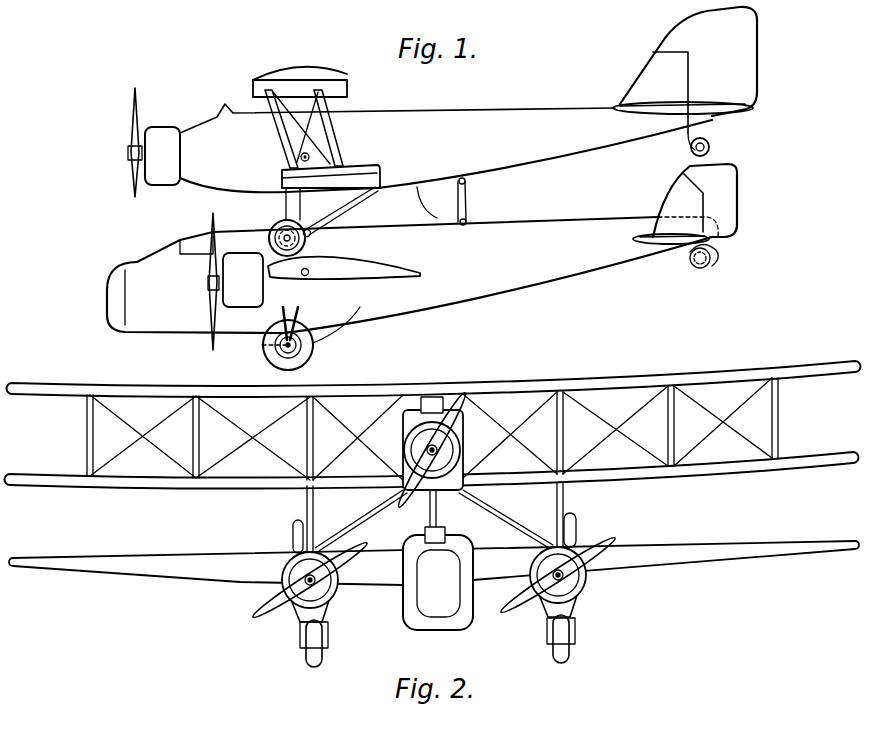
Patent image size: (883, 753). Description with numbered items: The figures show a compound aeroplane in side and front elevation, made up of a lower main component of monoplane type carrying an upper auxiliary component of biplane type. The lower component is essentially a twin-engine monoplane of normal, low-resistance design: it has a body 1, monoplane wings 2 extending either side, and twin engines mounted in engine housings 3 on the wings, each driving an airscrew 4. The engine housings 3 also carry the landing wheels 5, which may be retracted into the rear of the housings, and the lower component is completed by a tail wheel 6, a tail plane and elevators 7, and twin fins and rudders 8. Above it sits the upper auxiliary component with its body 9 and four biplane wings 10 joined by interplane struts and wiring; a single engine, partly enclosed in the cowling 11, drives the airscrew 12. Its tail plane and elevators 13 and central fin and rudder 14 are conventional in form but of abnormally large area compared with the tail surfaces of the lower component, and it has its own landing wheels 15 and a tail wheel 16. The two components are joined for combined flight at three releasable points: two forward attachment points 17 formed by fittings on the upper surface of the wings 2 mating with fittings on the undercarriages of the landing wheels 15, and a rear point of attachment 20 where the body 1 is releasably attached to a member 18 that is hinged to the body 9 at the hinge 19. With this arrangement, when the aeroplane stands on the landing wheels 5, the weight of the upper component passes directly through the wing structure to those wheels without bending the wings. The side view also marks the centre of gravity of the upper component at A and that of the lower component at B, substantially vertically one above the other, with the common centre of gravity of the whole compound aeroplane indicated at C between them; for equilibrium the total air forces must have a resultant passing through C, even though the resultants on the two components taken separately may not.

In FIG. 1, the body 1 is at (509, 296).
In FIG. 2, the body 1 is at (410, 612).
In FIG. 1, the monoplane wings 2 is at (385, 266).
In FIG. 2, the monoplane wings 2 is at (162, 568).
In FIG. 1, the engine housings 3 is at (280, 297).
In FIG. 1, the airscrews 4 is at (210, 318).
In FIG. 2, the airscrews 4 is at (258, 614).
In FIG. 1, the landing wheels 5 is at (315, 346).
In FIG. 2, the landing wheels 5 is at (320, 640).
In FIG. 1, the tail wheel 6 is at (700, 270).
In FIG. 1, the tail plane and elevators 7 is at (660, 244).
In FIG. 1, the twin fins and rudders 8 is at (730, 188).
In FIG. 1, the body 9 is at (482, 113).
In FIG. 2, the body 9 is at (466, 467).
In FIG. 1, the biplane wings 10 is at (296, 75).
In FIG. 2, the biplane wings 10 is at (530, 385).
In FIG. 1, the cowling 11 is at (160, 130).
In FIG. 2, the cowling 11 is at (428, 425).
In FIG. 1, the airscrew 12 is at (133, 177).
In FIG. 2, the airscrew 12 is at (455, 402).
In FIG. 1, the tail plane and elevators 13 is at (655, 105).
In FIG. 1, the central fin and rudder 14 is at (738, 57).
In FIG. 1, the landing wheels 15 is at (272, 227).
In FIG. 2, the landing wheels 15 is at (293, 530).
In FIG. 1, the tail wheel 16 is at (710, 146).
In FIG. 1, the forward attachment points 17 is at (312, 247).
In FIG. 2, the forward attachment points 17 is at (320, 551).
In FIG. 1, the member 18 is at (455, 201).
In FIG. 2, the member 18 is at (438, 515).
In FIG. 1, the hinge 19 is at (470, 183).
In FIG. 1, the rear point of attachment 20 is at (469, 221).
In FIG. 1, the centre of gravity of the upper component A is at (310, 157).
In FIG. 1, the centre of gravity of the lower component B is at (308, 276).
In FIG. 1, the common centre of gravity C is at (312, 231).